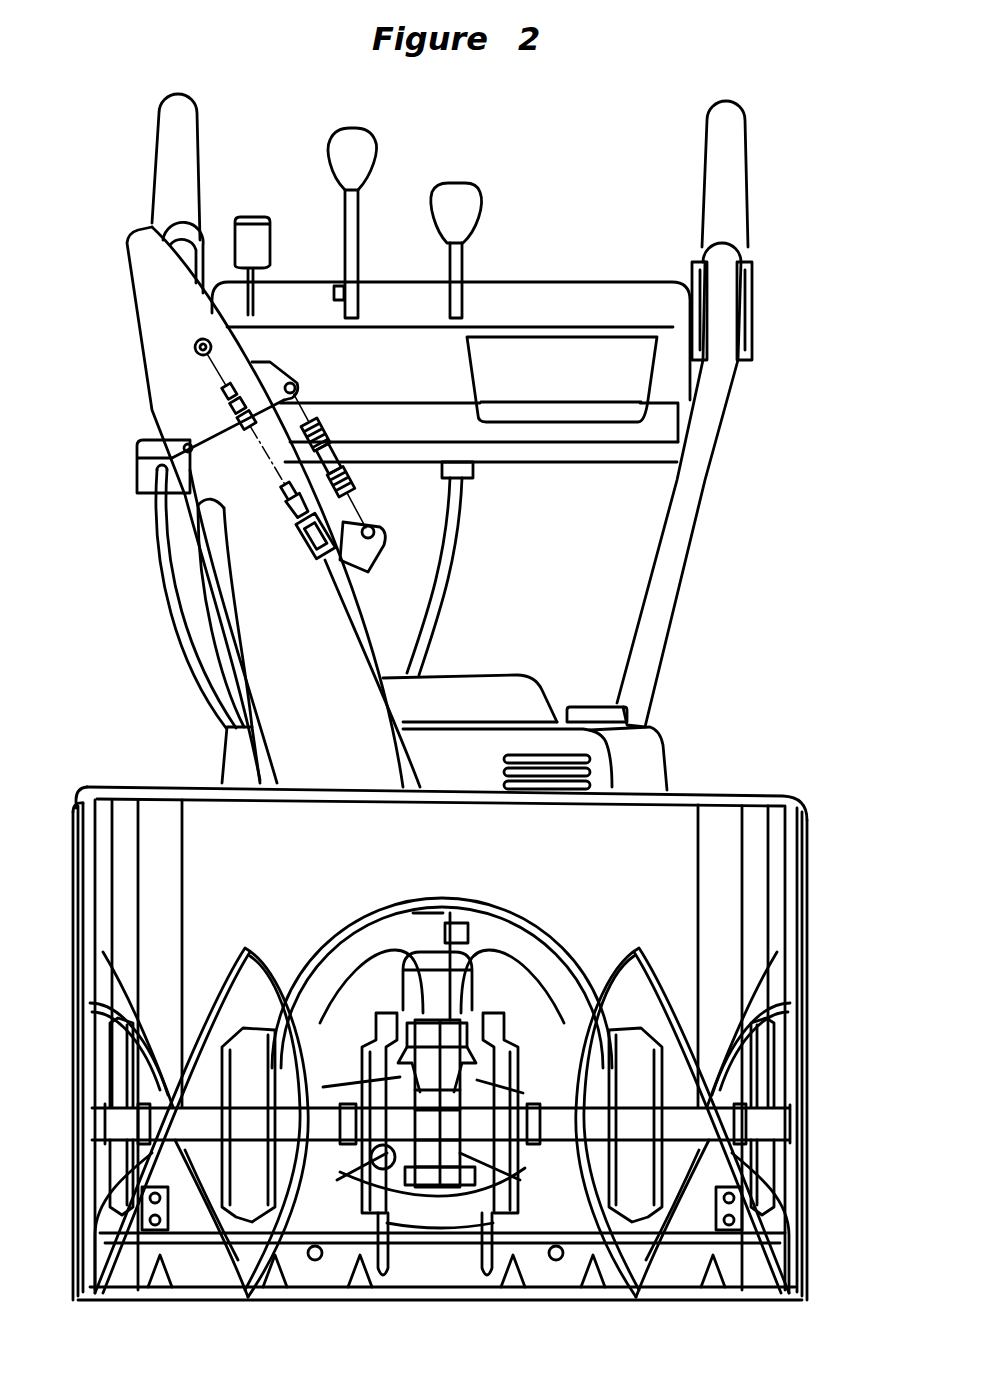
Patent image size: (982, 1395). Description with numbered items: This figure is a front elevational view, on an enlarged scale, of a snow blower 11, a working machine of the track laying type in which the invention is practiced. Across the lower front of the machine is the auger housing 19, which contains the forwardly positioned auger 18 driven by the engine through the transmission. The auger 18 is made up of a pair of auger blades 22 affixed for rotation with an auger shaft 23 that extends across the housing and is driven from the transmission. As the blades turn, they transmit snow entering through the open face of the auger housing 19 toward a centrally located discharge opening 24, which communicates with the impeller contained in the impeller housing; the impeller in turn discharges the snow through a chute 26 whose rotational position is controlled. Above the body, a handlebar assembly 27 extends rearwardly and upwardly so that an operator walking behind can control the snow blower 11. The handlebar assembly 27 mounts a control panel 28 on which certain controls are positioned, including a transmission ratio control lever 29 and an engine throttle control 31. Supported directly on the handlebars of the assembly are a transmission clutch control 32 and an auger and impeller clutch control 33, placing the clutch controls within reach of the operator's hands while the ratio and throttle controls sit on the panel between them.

The snow blower 11 is at (737, 549).
The auger 18 is at (688, 935).
The auger housing 19 is at (690, 794).
The auger blades 22 is at (265, 982).
The auger shaft 23 is at (247, 1128).
The discharge opening 24 is at (538, 950).
The chute 26 is at (258, 590).
The handlebar assembly 27 is at (667, 600).
The control panel 28 is at (533, 293).
The transmission ratio control lever 29 is at (362, 147).
The engine throttle control 31 is at (467, 193).
The transmission clutch control 32 is at (730, 148).
The auger, impeller clutch control 33 is at (173, 167).